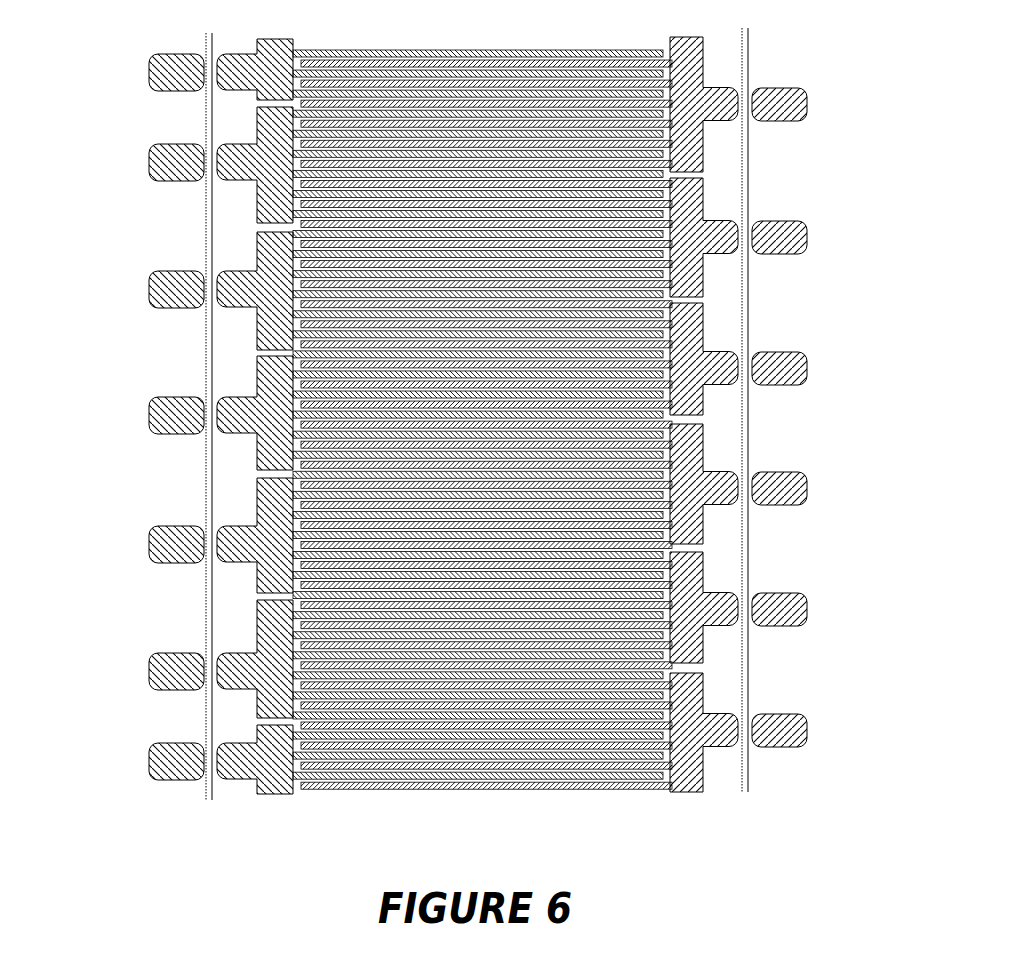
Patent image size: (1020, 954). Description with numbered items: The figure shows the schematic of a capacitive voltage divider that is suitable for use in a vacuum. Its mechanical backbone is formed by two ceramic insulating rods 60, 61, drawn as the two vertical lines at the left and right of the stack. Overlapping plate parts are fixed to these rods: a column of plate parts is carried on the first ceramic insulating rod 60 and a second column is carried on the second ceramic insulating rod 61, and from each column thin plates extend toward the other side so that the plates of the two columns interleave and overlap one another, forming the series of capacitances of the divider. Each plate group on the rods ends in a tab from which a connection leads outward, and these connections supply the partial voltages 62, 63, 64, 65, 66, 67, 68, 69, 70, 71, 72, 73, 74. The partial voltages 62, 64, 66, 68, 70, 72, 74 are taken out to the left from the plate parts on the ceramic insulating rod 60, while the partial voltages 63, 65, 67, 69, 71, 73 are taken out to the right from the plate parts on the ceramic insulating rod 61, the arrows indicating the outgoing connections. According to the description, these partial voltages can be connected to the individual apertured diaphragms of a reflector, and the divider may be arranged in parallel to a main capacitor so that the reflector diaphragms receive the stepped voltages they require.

The ceramic insulating rod 60 is at (211, 422).
The ceramic insulating rod 61 is at (746, 414).
The partial voltage 62 is at (149, 72).
The partial voltage 63 is at (862, 104).
The partial voltage 64 is at (149, 162).
The partial voltage 65 is at (862, 237).
The partial voltage 66 is at (149, 289).
The partial voltage 67 is at (862, 368).
The partial voltage 68 is at (149, 415).
The partial voltage 69 is at (862, 488).
The partial voltage 70 is at (149, 544).
The partial voltage 71 is at (862, 609).
The partial voltage 72 is at (149, 671).
The partial voltage 73 is at (862, 730).
The partial voltage 74 is at (149, 761).